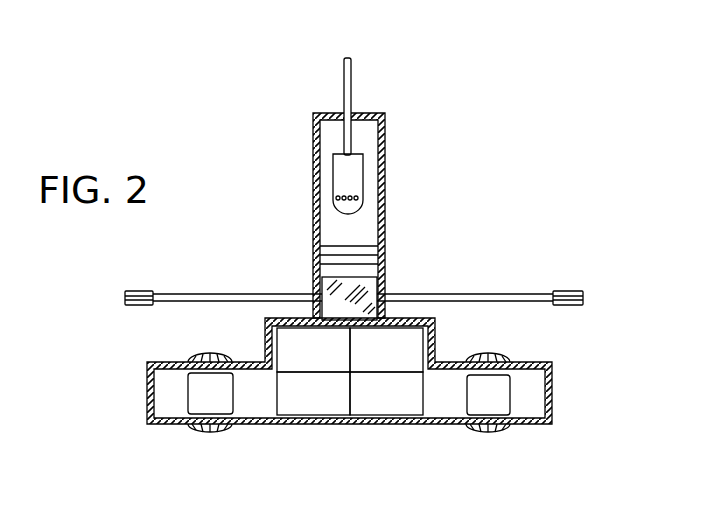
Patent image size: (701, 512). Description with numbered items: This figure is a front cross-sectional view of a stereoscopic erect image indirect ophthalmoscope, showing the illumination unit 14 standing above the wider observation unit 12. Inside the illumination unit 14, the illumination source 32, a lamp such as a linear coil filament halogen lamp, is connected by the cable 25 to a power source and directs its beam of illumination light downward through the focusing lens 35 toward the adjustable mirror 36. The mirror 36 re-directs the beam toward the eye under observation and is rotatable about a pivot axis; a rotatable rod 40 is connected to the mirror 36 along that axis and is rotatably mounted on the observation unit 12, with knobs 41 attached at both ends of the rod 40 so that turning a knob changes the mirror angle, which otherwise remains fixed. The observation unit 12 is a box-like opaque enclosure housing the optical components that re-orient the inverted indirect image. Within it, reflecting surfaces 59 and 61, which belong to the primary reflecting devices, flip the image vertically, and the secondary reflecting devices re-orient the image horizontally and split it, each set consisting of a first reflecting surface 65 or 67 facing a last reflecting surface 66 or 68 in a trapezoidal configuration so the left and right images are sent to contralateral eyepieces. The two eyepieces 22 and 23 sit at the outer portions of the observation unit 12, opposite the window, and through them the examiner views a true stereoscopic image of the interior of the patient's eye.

The observation unit 12 is at (553, 400).
The illumination unit 14 is at (386, 166).
The eyepiece 22 is at (510, 362).
The eyepiece 23 is at (200, 356).
The cable 25 is at (344, 72).
The illumination source 32 is at (335, 172).
The focusing lens 35 is at (368, 252).
The adjustable mirror 36 is at (323, 290).
The rotatable rod 40 is at (247, 297).
The knobs 41 is at (143, 291).
The reflecting surface 59 is at (418, 346).
The reflecting surface 61 is at (290, 350).
The first reflecting surface 65 is at (302, 405).
The last reflecting surface 66 is at (487, 410).
The first reflecting surface 67 is at (378, 405).
The last reflecting surface 68 is at (197, 398).